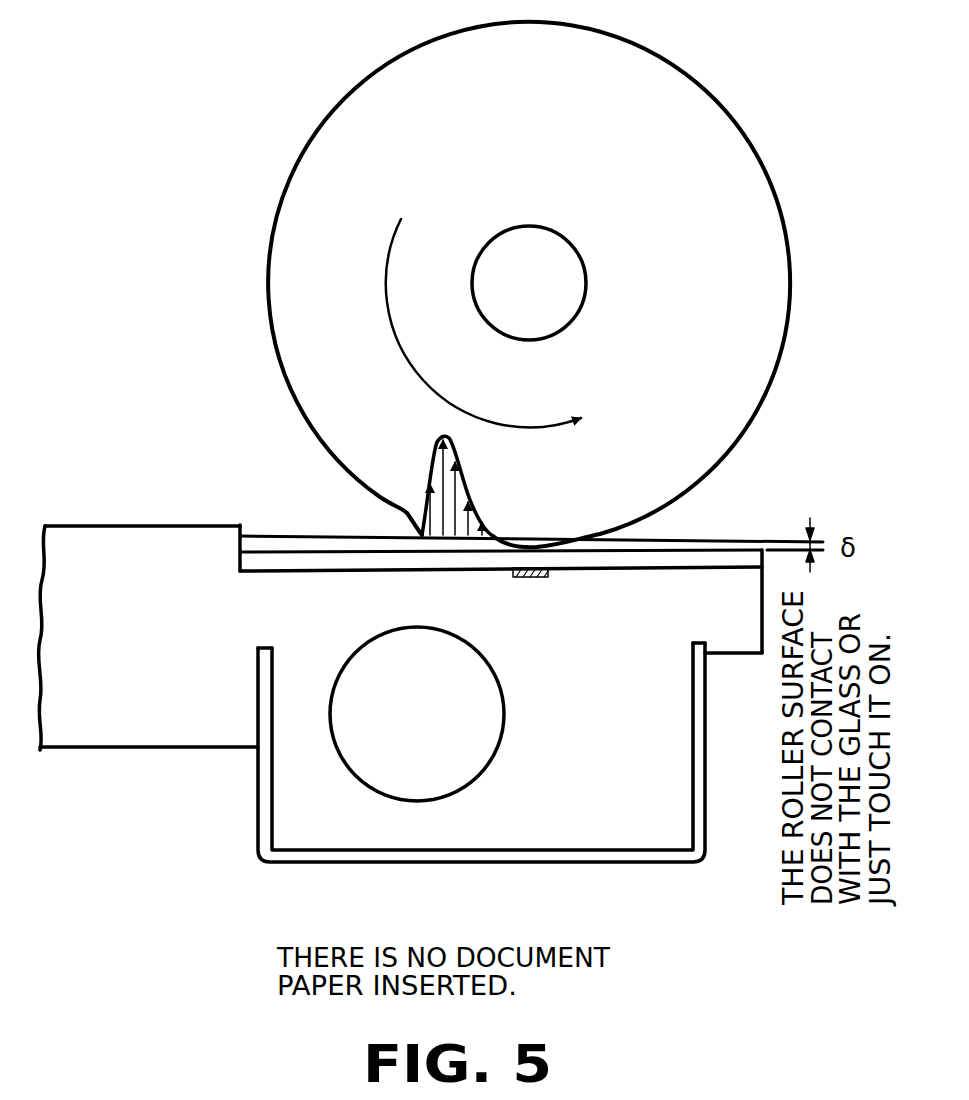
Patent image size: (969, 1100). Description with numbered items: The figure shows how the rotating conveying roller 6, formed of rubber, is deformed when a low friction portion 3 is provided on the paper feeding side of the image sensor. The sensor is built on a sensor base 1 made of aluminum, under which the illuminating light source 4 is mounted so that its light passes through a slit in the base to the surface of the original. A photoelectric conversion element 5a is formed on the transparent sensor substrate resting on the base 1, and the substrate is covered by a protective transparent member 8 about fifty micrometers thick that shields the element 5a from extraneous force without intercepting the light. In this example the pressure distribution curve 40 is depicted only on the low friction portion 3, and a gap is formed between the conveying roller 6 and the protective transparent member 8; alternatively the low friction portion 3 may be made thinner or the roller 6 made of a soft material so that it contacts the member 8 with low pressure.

The sensor base 1 is at (147, 730).
The low friction portion 3 is at (287, 538).
The illuminating light source 4 is at (418, 792).
The photoelectric conversion element 5a is at (532, 578).
The conveying roller 6 is at (768, 227).
The protective transparent member 8 is at (662, 568).
The pressure distribution curve 40 is at (470, 481).